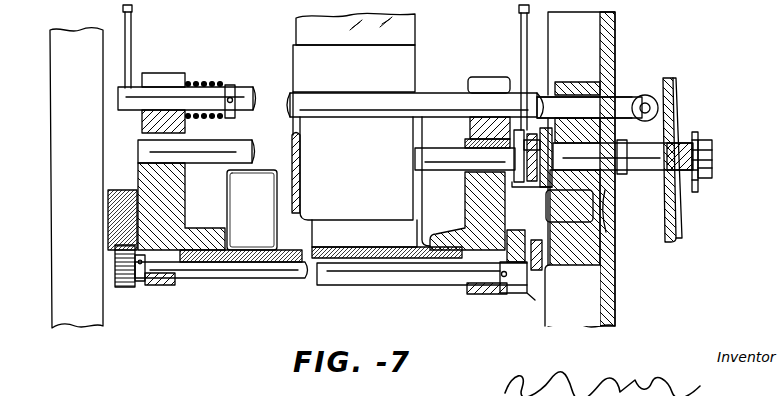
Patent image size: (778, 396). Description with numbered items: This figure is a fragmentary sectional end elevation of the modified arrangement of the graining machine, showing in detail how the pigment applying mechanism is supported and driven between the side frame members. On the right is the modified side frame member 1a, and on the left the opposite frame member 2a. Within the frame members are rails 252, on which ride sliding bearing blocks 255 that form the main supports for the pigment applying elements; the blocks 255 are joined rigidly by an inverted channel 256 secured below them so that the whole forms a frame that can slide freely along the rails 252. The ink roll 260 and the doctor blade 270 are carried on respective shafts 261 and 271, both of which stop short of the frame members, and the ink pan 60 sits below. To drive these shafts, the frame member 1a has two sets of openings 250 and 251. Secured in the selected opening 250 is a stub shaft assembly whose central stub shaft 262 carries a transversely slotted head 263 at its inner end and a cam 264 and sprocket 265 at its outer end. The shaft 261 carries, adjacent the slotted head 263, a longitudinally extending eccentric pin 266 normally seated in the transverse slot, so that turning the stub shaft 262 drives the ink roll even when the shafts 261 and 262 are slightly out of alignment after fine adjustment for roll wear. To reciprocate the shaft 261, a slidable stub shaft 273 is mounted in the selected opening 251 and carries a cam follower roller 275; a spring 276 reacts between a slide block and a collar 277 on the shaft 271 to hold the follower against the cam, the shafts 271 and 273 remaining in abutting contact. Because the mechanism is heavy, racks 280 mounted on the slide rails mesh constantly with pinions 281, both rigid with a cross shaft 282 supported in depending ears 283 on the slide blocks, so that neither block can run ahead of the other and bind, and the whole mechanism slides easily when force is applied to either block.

The left frame wall 2a is at (76, 178).
The side frame member 1a is at (580, 169).
The shaft 271 is at (122, 98).
The collar 277 is at (238, 85).
The spring 276 is at (193, 83).
The shaft 261 is at (203, 150).
The sliding bearing blocks 255 is at (138, 180).
The ink pan 60 is at (226, 200).
The rails 252 is at (108, 230).
The racks 280 is at (113, 250).
The pinions 281 is at (118, 278).
The inverted channel 256 is at (240, 283).
The cross shaft 282 is at (225, 268).
The depending ears 283 is at (162, 285).
The doctor blade 270 is at (354, 74).
The ink roll 260 is at (354, 182).
The eccentric pin 266 is at (512, 62).
The transversely slotted head 263 is at (551, 95).
The slidable stub shaft 273 is at (602, 104).
The openings 251 is at (603, 97).
The cam 264 is at (672, 90).
The cam follower roller 275 is at (648, 94).
The central stub shaft 262 is at (612, 173).
The openings 250 is at (608, 190).
The sprocket 265 is at (694, 135).